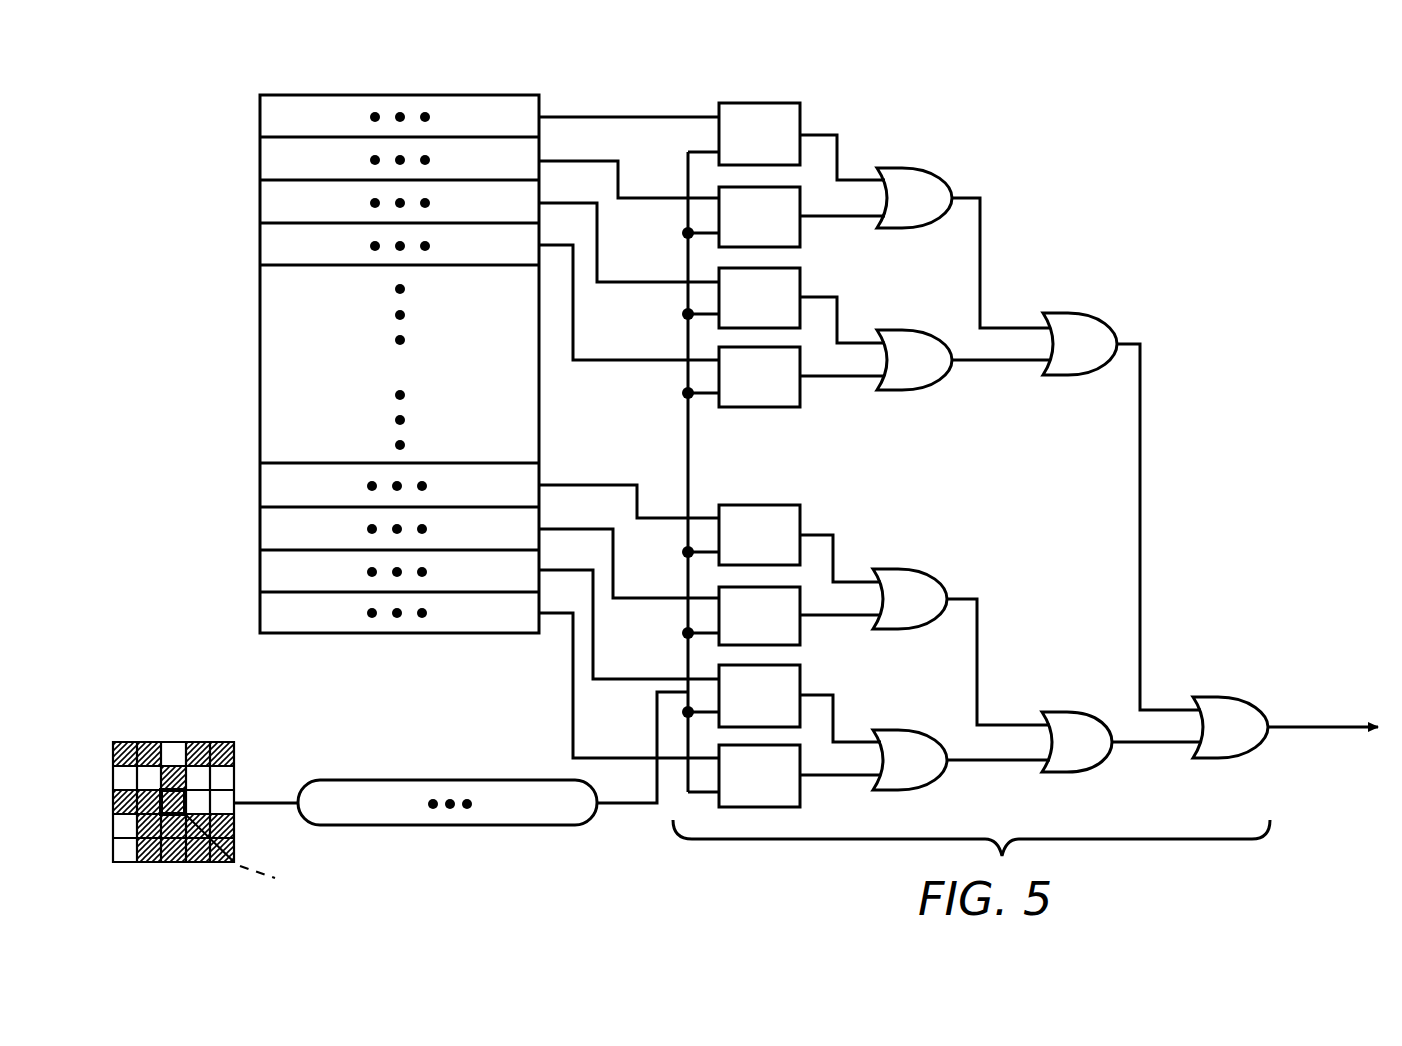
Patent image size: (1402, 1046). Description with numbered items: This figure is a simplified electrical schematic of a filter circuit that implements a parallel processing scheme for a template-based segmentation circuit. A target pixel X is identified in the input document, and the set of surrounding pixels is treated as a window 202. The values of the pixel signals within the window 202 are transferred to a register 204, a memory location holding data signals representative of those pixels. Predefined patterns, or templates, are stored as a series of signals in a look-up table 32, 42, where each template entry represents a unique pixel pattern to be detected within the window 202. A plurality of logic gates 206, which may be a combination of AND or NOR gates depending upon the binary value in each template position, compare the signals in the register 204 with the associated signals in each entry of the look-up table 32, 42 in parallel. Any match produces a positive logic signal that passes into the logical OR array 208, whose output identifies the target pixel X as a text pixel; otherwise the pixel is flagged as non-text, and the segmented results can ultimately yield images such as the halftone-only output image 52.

The look-up table 32 is at (353, 364).
The look-up table 42 is at (234, 285).
The window 202 is at (123, 864).
The register 204 is at (448, 826).
The logic gates 206 is at (822, 117).
The logical OR array 208 is at (944, 160).
The halftone-only output image 52 is at (1303, 729).